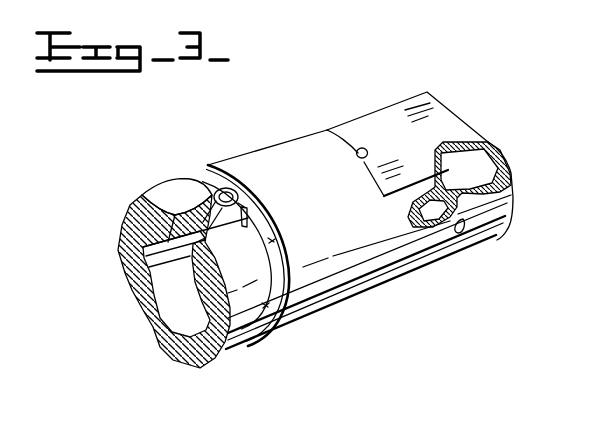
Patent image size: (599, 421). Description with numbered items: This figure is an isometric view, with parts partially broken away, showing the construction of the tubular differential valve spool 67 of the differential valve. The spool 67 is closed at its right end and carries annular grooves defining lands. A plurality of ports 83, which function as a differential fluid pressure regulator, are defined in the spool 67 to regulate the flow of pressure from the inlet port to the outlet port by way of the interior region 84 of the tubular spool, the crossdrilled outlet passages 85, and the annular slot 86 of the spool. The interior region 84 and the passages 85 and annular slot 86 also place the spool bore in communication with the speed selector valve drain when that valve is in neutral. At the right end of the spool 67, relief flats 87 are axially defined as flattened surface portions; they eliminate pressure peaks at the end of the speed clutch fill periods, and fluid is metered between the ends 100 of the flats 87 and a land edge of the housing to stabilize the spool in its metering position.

The differential valve spool 67 is at (267, 150).
The relief flats 87 is at (367, 121).
The ends of the flats 100 is at (357, 161).
The crossdrilled outlet passages 85 is at (239, 202).
The annular slot 86 is at (279, 259).
The interior region 84 is at (158, 274).
The ports 83 is at (464, 210).